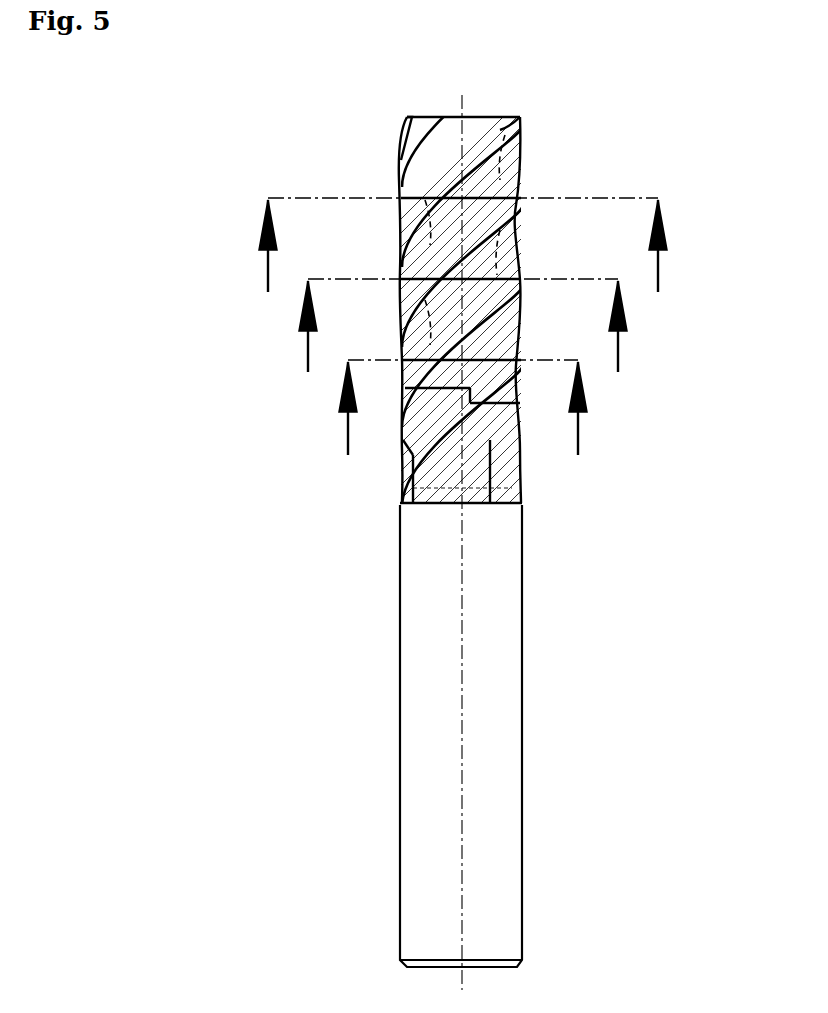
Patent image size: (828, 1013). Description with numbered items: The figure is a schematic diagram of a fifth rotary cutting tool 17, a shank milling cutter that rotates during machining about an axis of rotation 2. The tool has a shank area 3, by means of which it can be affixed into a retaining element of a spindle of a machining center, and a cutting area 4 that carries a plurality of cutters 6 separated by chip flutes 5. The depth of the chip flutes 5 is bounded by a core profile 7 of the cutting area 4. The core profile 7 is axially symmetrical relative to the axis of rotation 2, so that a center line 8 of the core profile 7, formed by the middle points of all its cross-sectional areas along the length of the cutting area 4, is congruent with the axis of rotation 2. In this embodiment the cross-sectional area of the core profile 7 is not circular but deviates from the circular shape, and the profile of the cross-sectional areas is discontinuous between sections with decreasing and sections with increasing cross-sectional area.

The fifth rotary cutting tool 17 is at (158, 590).
The axis of rotation 2 is at (462, 736).
The shank area 3 is at (360, 782).
The cutting area 4 is at (366, 138).
The chip flutes 5 is at (512, 126).
The cutters 6 is at (405, 136).
The core profile 7 is at (410, 472).
The center line 8 is at (462, 434).